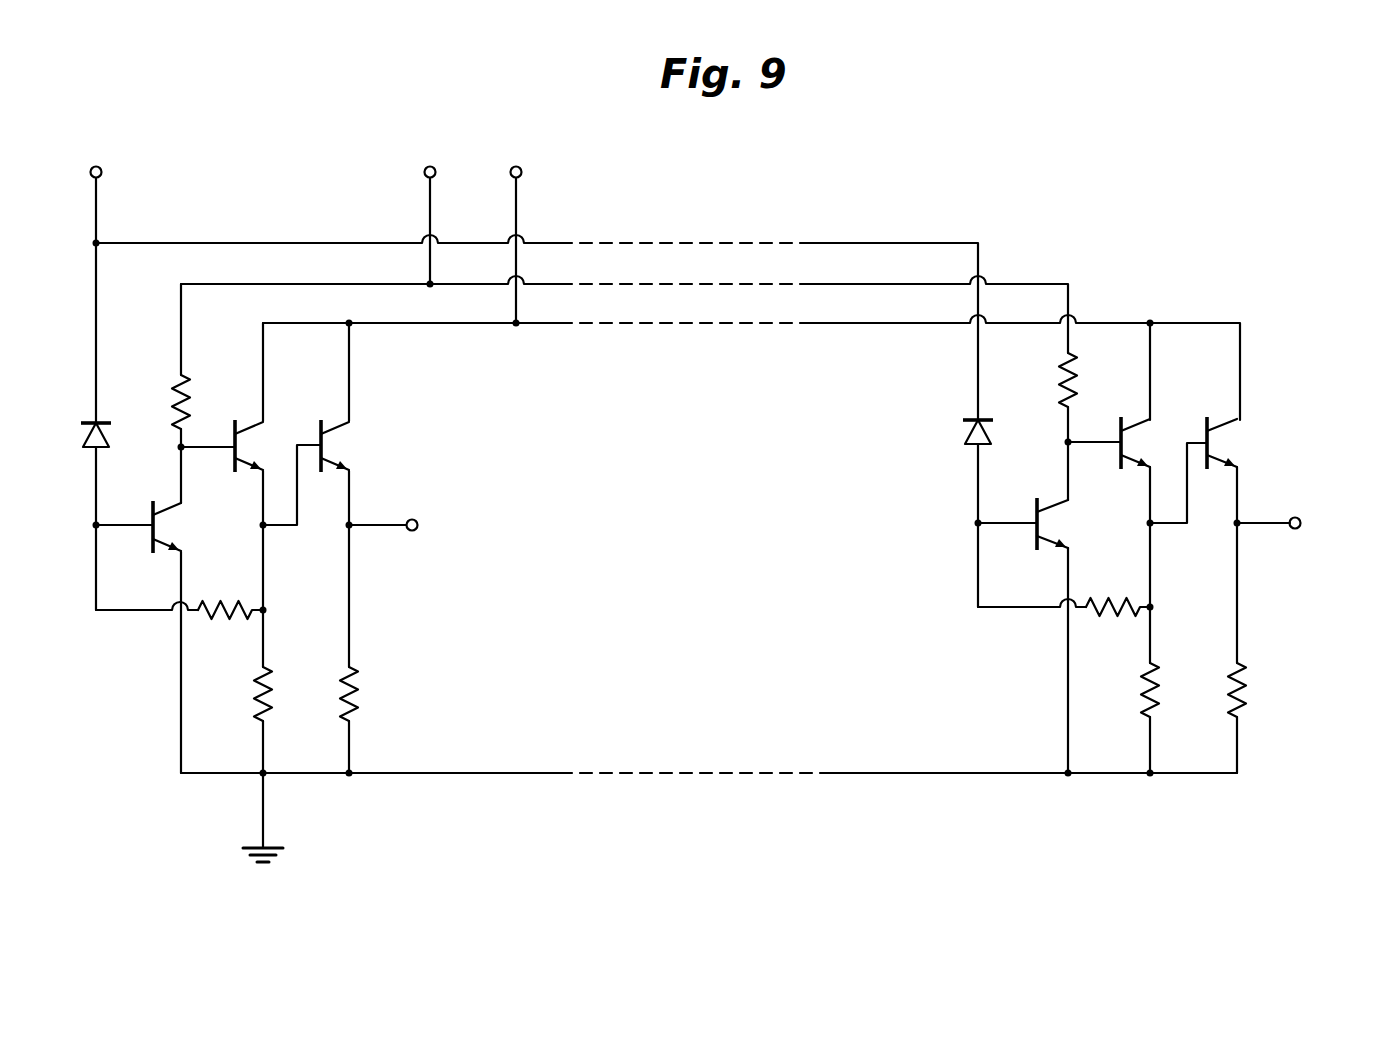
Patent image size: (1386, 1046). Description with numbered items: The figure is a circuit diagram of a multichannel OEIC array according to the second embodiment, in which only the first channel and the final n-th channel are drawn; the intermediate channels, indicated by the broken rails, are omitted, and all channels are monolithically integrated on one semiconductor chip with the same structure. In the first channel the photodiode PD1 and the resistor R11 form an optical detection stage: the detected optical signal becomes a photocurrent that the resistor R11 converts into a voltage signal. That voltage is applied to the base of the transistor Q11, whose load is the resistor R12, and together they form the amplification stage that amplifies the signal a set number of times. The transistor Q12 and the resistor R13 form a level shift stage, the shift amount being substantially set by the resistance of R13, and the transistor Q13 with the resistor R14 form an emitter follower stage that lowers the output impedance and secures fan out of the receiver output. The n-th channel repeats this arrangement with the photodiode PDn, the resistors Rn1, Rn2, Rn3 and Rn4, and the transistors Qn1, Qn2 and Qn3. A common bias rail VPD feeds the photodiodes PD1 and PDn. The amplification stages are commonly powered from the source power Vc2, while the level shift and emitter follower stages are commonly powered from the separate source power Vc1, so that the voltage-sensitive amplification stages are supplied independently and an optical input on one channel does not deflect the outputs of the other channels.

The photodiode bias supply VPD is at (97, 159).
The electric source power VC2 Vc2 is at (430, 159).
The electric source power VC1 Vc1 is at (516, 159).
The photodiode PD1 is at (69, 434).
The photodiode PDn is at (949, 431).
The transistor Q11 is at (183, 527).
The transistor Q12 is at (262, 446).
The transistor Q13 is at (350, 446).
The transistor Qn1 is at (1064, 524).
The transistor Qn2 is at (1147, 443).
The transistor Qn3 is at (1235, 443).
The resistor R11 is at (230, 595).
The resistor R12 is at (197, 402).
The resistor R13 is at (279, 694).
The resistor R14 is at (365, 694).
The resistor Rn1 is at (1118, 591).
The resistor Rn2 is at (1085, 380).
The resistor Rn3 is at (1167, 690).
The resistor Rn4 is at (1254, 690).